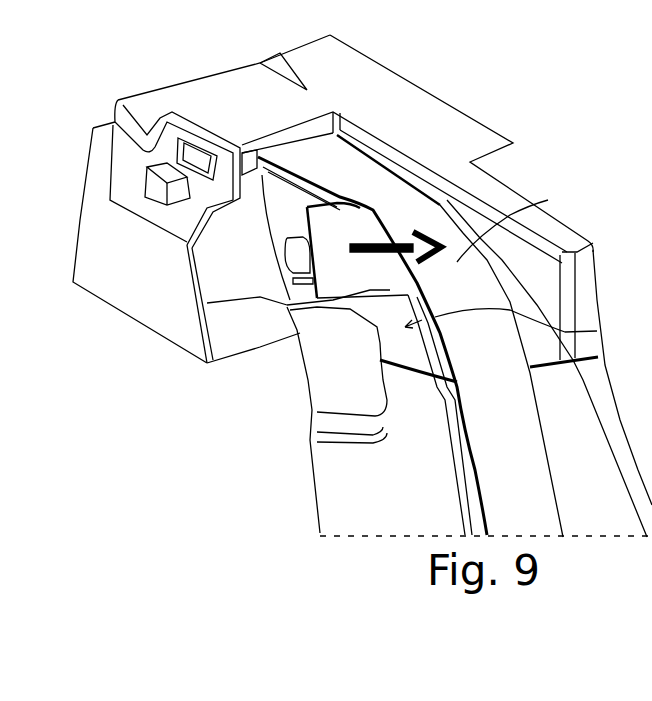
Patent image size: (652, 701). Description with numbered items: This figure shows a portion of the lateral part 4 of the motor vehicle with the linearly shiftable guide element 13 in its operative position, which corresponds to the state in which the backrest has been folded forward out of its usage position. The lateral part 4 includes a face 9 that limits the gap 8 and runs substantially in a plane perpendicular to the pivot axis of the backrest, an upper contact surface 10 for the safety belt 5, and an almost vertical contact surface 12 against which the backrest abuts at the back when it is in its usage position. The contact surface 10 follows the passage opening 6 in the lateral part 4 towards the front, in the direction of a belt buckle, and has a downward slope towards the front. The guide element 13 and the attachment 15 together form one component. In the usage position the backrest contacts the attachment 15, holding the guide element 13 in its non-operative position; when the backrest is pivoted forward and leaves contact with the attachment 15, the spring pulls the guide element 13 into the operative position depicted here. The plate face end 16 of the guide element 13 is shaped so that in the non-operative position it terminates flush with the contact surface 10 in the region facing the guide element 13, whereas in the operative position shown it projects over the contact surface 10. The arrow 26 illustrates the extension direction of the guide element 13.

The lateral part 4 is at (592, 298).
The safety belt 5 is at (518, 293).
The passage opening 6 is at (250, 153).
The gap 8 is at (597, 331).
The face 9 is at (385, 305).
The contact surface 10 is at (564, 252).
The contact surface 12 is at (203, 272).
The guide element 13 is at (357, 278).
The attachment 15 is at (205, 303).
The plate face end 16 is at (375, 203).
The arrow 26 is at (376, 245).